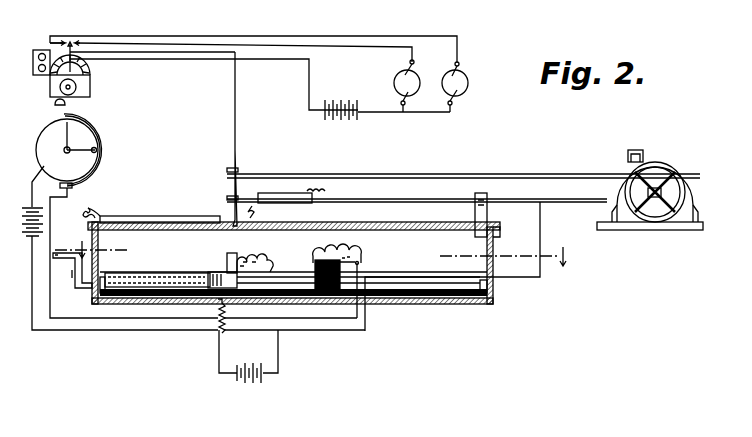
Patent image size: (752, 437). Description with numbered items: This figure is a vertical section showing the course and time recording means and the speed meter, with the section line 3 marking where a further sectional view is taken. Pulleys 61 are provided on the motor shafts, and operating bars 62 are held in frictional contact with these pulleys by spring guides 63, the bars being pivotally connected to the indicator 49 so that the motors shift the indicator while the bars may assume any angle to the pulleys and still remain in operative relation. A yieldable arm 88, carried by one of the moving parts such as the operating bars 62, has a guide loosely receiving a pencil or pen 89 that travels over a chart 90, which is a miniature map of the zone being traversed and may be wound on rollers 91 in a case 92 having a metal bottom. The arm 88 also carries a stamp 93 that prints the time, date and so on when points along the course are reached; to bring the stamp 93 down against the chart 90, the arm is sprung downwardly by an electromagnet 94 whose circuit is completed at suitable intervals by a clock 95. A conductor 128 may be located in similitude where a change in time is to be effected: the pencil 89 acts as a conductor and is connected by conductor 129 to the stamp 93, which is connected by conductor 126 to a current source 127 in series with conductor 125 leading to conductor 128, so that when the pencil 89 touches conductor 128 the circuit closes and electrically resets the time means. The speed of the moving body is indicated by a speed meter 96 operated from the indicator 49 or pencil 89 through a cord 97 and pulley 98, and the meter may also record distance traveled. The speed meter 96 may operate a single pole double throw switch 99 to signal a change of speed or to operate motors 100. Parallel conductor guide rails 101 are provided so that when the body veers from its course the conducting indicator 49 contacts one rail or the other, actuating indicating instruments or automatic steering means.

The section line 3- 3 is at (320, 256).
The indicator 49 is at (238, 146).
The pulleys 61 is at (633, 203).
The operating bars 62 is at (507, 175).
The spring guides 63 is at (628, 158).
The yieldable arm 88 is at (517, 279).
The pencil or pen 89 is at (227, 261).
The chart 90 is at (143, 304).
The rollers 91 is at (124, 277).
The case 92 is at (90, 293).
The stamp 93 is at (213, 304).
The electromagnet 94 is at (327, 259).
The clock 95 is at (98, 151).
The speed meter 96 is at (54, 91).
The cord 97 is at (172, 64).
The pulley 98 is at (77, 90).
The single pole double throw switch 99 is at (73, 42).
The motors 100 is at (394, 79).
The parallel conductor guide rails 101 is at (157, 218).
The conductor 125 is at (222, 352).
The conductor 126 is at (280, 352).
The current source 127 is at (259, 382).
The conductor 128 is at (226, 306).
The conductor 129 is at (252, 258).